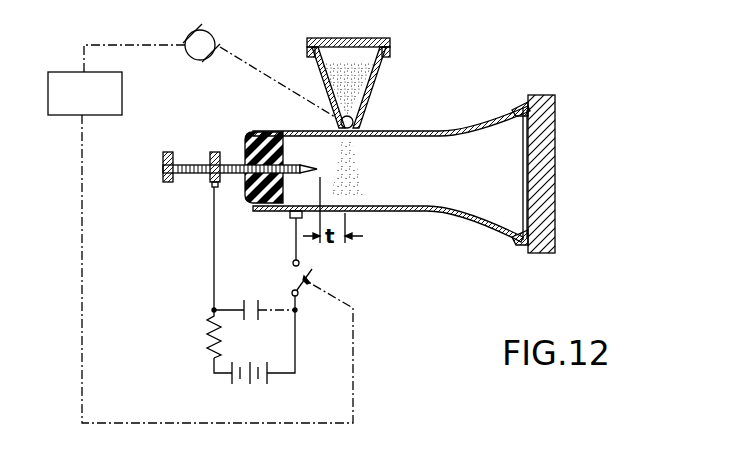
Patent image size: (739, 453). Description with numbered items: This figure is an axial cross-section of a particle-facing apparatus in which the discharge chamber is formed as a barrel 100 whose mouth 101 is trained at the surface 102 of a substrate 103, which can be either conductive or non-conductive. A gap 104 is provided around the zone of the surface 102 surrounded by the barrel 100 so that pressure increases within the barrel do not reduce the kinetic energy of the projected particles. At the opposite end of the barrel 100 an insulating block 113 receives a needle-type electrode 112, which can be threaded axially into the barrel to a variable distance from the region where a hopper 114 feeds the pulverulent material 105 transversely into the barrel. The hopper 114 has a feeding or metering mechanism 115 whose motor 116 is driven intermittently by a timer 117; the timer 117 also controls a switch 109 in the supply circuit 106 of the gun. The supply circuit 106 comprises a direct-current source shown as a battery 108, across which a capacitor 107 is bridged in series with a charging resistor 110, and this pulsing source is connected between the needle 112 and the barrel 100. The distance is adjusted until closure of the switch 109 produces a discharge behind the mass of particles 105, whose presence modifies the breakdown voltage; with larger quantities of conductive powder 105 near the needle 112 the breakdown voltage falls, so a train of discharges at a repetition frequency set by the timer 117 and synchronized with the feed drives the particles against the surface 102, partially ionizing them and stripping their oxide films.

The barrel 100 is at (427, 213).
The mouth 101 is at (527, 181).
The surface 102 is at (520, 238).
The substrate 103 is at (546, 148).
The gap 104 is at (525, 105).
The pulverulent material 105 is at (362, 175).
The supply circuit 106 is at (295, 347).
The capacitor 107 is at (245, 308).
The battery 108 is at (257, 388).
The switch 109 is at (305, 273).
The charging resistor 110 is at (207, 350).
The needle-type electrode 112 is at (193, 161).
The insulating block 113 is at (243, 200).
The hopper 114 is at (368, 80).
The feeding or metering mechanism 115 is at (353, 121).
The motor 116 is at (207, 40).
The timer 117 is at (57, 77).